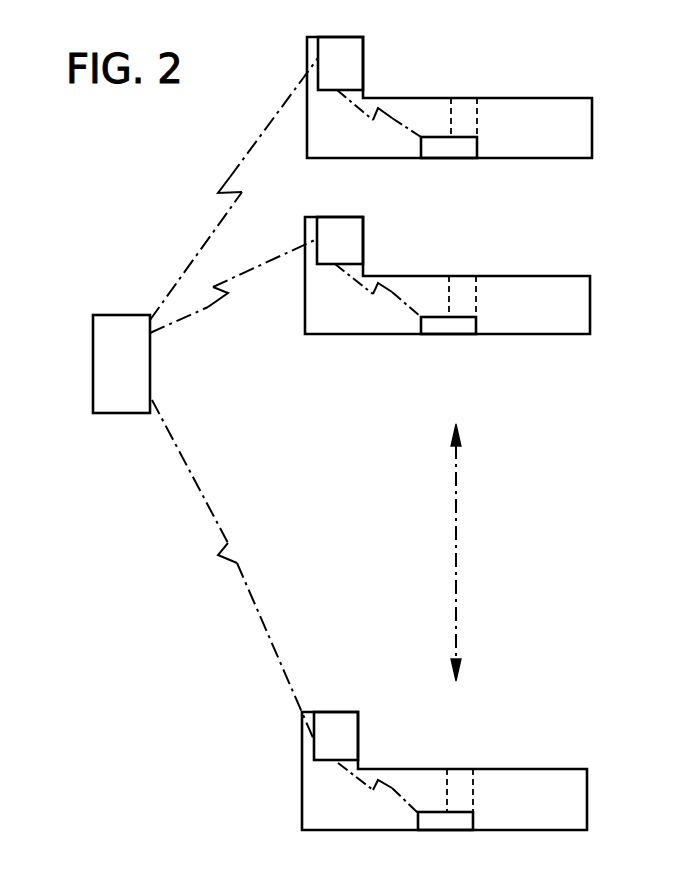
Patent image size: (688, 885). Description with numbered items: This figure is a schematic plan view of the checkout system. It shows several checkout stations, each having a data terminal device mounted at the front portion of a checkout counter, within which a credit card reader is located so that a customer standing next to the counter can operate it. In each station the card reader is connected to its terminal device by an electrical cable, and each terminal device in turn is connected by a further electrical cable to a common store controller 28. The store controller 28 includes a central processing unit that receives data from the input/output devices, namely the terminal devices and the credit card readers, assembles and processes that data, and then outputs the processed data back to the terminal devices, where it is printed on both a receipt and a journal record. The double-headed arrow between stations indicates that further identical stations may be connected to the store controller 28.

The store controller 28 is at (103, 328).